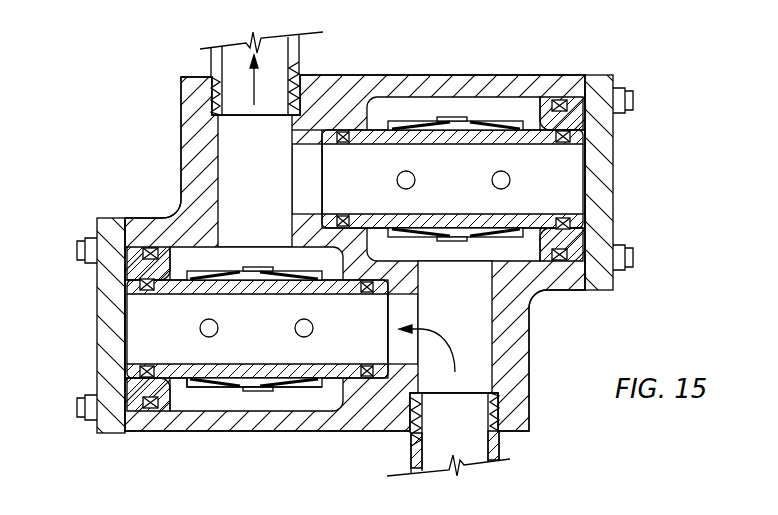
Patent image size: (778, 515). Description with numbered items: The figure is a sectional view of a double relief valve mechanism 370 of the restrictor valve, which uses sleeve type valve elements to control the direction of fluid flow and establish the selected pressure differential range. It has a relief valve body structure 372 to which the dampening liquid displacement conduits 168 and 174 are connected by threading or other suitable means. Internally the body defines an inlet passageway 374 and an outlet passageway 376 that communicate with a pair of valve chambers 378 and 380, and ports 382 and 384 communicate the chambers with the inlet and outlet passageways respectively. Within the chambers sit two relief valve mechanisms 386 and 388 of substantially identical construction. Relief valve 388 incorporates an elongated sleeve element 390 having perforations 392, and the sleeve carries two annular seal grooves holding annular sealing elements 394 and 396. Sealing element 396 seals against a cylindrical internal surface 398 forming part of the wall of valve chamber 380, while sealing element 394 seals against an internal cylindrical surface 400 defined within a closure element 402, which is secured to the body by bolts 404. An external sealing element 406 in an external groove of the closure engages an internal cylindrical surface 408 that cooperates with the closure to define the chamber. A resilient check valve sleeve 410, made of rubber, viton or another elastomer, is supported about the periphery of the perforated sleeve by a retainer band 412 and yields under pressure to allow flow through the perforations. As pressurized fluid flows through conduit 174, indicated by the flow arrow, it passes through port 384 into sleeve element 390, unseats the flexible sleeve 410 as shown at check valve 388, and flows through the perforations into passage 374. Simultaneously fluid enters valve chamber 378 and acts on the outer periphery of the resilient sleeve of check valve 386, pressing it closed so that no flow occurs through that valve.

The dampening liquid displacement conduit 168 is at (299, 49).
The dampening liquid displacement conduit 174 is at (498, 447).
The relief valve mechanism 370 is at (467, 52).
The relief valve body structure 372 is at (355, 93).
The inlet passageway 374 is at (218, 153).
The outlet passageway 376 is at (490, 341).
The valve chamber 378 is at (492, 98).
The valve chamber 380 is at (181, 256).
The port 382 is at (308, 215).
The port 384 is at (406, 293).
The relief valve mechanism 386 is at (427, 108).
The relief valve mechanism 388 is at (260, 397).
The elongated sleeve element 390 is at (192, 290).
The perforations 392 is at (310, 292).
The annular sealing element 394 is at (148, 370).
The annular sealing element 396 is at (370, 368).
The cylindrical internal surface 398 is at (334, 295).
The internal cylindrical surface 400 is at (133, 282).
The closure element 402 is at (100, 294).
The bolts 404 is at (96, 394).
The external sealing element 406 is at (154, 383).
The internal cylindrical surface 408 is at (220, 400).
The resilient check valve sleeve 410 is at (307, 398).
The retainer band 412 is at (267, 398).